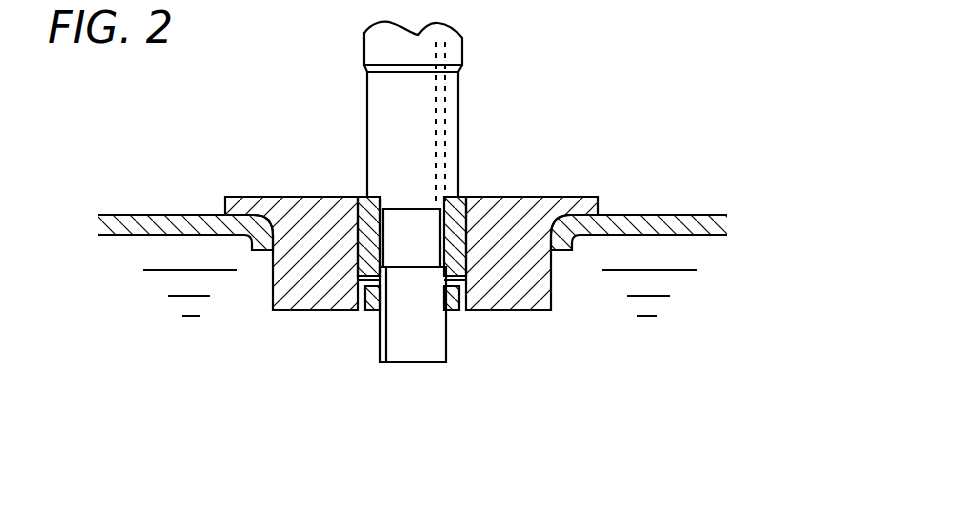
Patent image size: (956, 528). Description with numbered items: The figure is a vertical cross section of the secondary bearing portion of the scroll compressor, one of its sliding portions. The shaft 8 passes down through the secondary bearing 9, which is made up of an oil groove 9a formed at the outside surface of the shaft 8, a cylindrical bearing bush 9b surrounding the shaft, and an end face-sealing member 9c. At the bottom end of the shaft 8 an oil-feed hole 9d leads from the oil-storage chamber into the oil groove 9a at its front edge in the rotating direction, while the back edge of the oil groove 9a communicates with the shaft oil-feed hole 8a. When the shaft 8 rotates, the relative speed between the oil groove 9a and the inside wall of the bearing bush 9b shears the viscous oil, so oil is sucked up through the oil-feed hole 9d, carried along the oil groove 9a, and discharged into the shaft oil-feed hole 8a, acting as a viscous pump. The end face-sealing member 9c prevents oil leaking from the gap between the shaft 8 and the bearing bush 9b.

The shaft 8 is at (384, 116).
The shaft oil-feed hole 8a is at (442, 142).
The secondary bearing 9 is at (281, 210).
The oil groove 9a is at (379, 236).
The bearing bush 9b is at (453, 245).
The end face-sealing member 9c is at (370, 290).
The oil-feed hole 9d is at (383, 363).